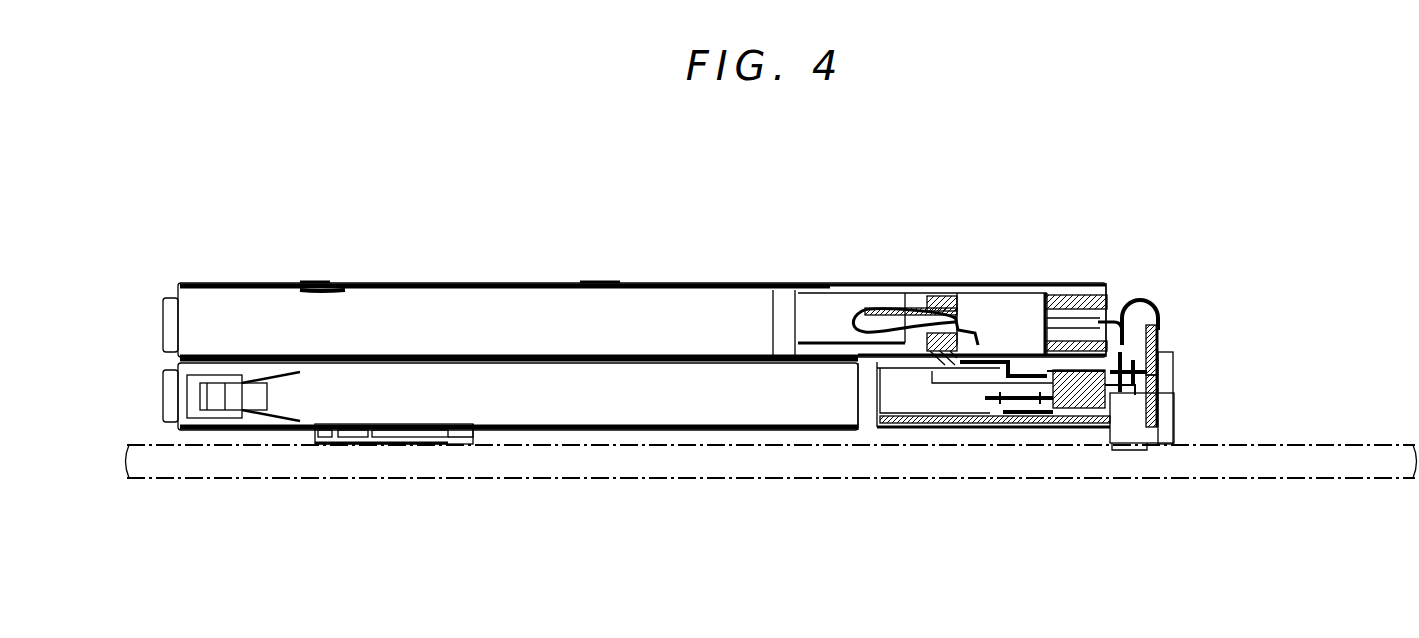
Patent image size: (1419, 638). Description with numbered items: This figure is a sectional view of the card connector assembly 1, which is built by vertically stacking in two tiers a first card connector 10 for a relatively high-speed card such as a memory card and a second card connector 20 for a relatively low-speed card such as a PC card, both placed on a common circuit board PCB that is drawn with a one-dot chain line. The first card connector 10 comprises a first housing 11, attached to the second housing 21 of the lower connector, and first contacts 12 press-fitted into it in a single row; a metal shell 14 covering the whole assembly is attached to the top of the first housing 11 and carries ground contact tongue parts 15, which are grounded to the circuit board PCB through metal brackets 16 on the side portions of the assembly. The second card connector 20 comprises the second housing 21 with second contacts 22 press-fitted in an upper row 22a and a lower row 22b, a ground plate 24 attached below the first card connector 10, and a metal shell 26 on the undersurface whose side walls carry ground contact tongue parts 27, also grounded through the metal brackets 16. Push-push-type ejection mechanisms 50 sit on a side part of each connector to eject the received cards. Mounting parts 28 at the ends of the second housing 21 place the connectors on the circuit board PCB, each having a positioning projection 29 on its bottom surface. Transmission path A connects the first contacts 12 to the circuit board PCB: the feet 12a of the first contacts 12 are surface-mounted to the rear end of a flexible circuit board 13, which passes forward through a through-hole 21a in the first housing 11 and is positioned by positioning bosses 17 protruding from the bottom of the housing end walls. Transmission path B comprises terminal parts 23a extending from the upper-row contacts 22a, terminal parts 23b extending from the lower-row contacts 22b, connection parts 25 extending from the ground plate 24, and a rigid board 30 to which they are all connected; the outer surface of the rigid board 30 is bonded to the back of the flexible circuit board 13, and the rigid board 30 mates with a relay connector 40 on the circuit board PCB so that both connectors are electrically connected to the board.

The card connector assembly 1 is at (983, 185).
The first card connector 10 is at (856, 282).
The first housing 11 is at (935, 290).
The first contacts 12 is at (887, 292).
The feet of the first contacts 12a is at (978, 335).
The flexible circuit board (FPC) 13 is at (990, 345).
The metal shell 14 is at (681, 284).
The ground contact tongue parts 15 is at (305, 290).
The metal brackets 16 is at (421, 445).
The positioning bosses 17 is at (1010, 345).
The second card connector 20 is at (930, 437).
The second housing 21 is at (1070, 408).
The through-hole 21a is at (1088, 300).
The second contacts 22 is at (1040, 535).
The second contacts of the upper row 22a is at (988, 393).
The second contacts of the lower row 22b is at (1028, 414).
The terminal parts 23a is at (1160, 352).
The terminal parts 23b is at (1163, 392).
The ground plate 24 is at (1038, 345).
The connection parts 25 is at (1148, 330).
The metal shell 26 is at (675, 430).
The ground contact tongue parts 27 is at (264, 395).
The mounting parts 28 is at (1172, 362).
The positioning projection 29 is at (1120, 452).
The rigid board 30 is at (1168, 405).
The relay connector 40 is at (1178, 420).
The ejection mechanisms 50 is at (160, 310).
The transmission path A is at (1145, 282).
The transmission path B is at (1130, 450).
The circuit board PCB is at (1303, 478).